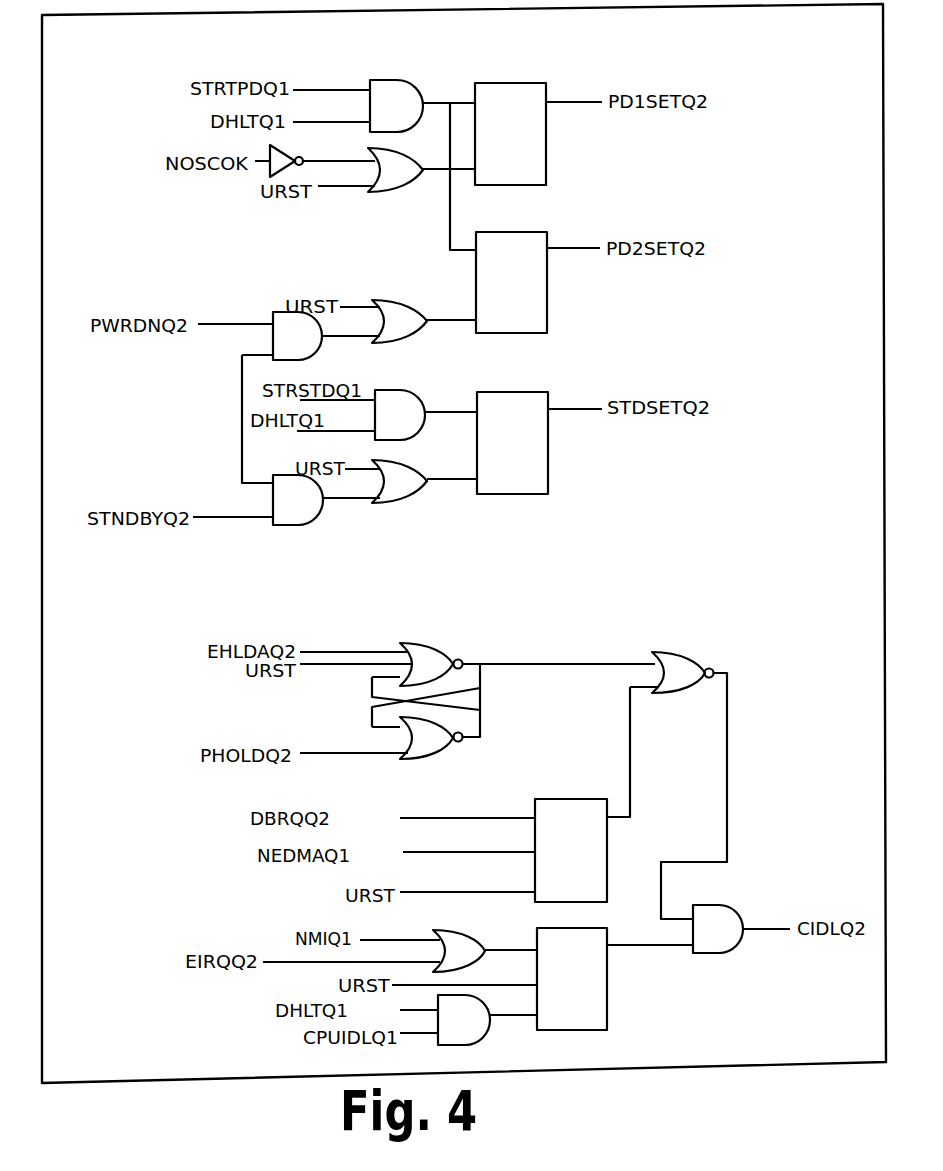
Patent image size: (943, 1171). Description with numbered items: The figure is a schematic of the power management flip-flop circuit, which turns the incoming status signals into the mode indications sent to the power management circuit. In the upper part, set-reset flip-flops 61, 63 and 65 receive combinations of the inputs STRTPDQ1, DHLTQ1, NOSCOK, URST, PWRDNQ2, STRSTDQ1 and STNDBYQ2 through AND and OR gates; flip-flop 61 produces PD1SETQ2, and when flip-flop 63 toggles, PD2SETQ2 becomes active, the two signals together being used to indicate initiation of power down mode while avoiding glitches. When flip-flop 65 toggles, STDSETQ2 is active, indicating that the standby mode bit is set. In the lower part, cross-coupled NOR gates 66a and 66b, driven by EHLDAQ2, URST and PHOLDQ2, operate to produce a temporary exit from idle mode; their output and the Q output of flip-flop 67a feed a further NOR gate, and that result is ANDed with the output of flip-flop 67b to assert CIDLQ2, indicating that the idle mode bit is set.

The flip-flop 61 is at (546, 135).
The flip-flop 63 is at (547, 297).
The flip-flop 65 is at (548, 457).
The NOR gate 66a is at (436, 646).
The NOR gate 66b is at (433, 752).
The flip-flop 67a is at (607, 890).
The flip-flop 67b is at (607, 995).